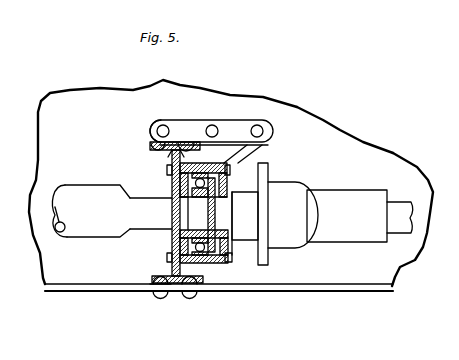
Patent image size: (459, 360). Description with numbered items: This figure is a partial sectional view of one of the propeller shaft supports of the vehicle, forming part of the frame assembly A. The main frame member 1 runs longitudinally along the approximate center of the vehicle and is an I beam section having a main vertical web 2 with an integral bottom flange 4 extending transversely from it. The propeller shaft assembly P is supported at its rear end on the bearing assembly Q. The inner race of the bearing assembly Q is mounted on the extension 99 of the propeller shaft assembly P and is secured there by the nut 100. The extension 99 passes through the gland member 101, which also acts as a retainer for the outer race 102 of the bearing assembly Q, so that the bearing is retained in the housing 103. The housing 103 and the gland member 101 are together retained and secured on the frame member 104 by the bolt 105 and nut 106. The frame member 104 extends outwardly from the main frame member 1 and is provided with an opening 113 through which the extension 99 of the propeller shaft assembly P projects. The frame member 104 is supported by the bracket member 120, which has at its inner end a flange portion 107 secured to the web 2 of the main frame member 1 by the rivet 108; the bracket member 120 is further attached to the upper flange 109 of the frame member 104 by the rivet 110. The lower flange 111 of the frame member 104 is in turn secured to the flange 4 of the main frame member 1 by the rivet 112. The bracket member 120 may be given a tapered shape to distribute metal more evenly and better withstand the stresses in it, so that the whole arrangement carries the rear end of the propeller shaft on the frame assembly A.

The main frame member 1 is at (228, 97).
The main vertical web 2 is at (366, 141).
The flange 4 is at (302, 292).
The extension 99 is at (148, 197).
The nut 100 is at (217, 265).
The gland member 101 is at (253, 119).
The outer race 102 is at (200, 160).
The housing 103 is at (163, 121).
The frame member 104 is at (162, 297).
The bolt 105 is at (167, 168).
The nut 106 is at (230, 260).
The flange portion 107 is at (224, 163).
The rivet 108 is at (155, 128).
The upper flange 109 is at (183, 141).
The rivet 110 is at (178, 141).
The lower flange 111 is at (198, 296).
The rivet 112 is at (154, 297).
The opening 113 is at (173, 200).
The bracket member 120 is at (262, 138).
The propeller shaft assembly P is at (89, 238).
The bearing assembly Q is at (210, 281).
The frame assembly A is at (396, 157).